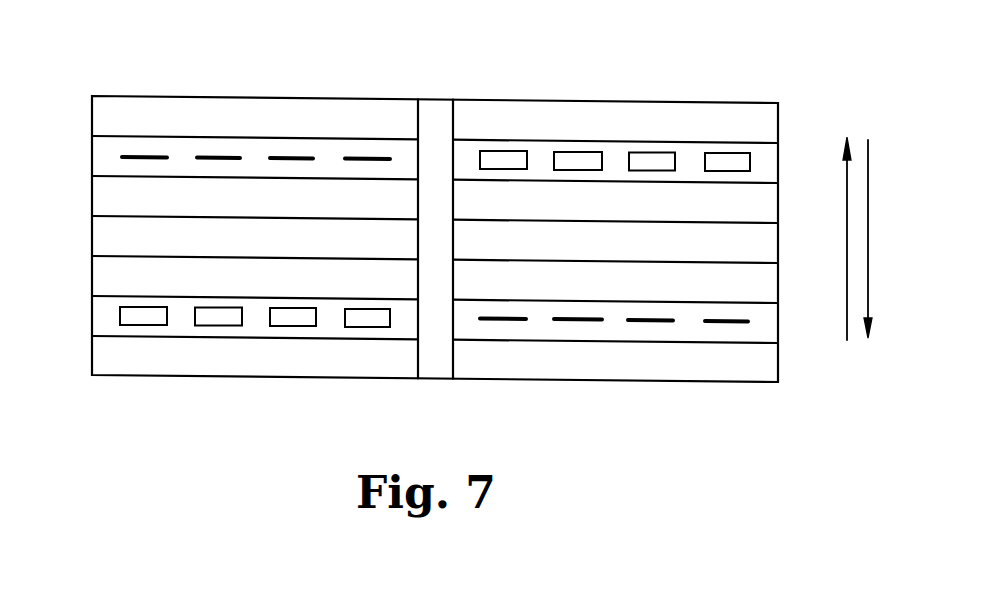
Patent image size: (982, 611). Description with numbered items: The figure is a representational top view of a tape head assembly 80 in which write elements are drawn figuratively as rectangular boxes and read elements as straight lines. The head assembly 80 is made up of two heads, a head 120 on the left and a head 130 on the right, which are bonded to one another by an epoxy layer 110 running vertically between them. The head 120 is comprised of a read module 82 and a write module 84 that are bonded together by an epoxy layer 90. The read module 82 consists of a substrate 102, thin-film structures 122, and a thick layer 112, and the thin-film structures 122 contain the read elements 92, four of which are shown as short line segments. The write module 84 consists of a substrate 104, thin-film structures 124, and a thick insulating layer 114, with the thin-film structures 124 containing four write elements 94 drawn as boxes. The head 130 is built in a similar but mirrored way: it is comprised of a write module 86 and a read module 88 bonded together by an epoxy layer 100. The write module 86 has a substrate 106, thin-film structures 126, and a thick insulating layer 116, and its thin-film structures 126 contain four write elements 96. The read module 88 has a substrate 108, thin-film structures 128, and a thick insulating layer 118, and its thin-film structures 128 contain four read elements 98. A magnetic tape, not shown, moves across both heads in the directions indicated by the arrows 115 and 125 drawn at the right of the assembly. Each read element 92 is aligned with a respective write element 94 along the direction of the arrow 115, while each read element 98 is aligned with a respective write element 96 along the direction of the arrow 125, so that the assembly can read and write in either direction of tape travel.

The head assembly 80 is at (470, 425).
The read module 82 is at (90, 96).
The write module 84 is at (90, 256).
The write module 86 is at (785, 103).
The read module 88 is at (785, 263).
The epoxy layer 90 is at (103, 232).
The read element 92 is at (203, 156).
The write element 94 is at (209, 318).
The write element 96 is at (718, 158).
The read element 98 is at (710, 322).
The epoxy layer 100 is at (763, 243).
The substrate 102 is at (342, 118).
The substrate 104 is at (370, 365).
The substrate 106 is at (615, 115).
The substrate 108 is at (603, 365).
The epoxy layer 110 is at (433, 362).
The thick layer 112 is at (255, 195).
The thick insulating layer 114 is at (330, 285).
The arrow 115 is at (847, 318).
The thick insulating layer 116 is at (755, 198).
The thick insulating layer 118 is at (755, 288).
The head 120 is at (90, 48).
The thin-film structures 122 is at (143, 145).
The thin-film structures 124 is at (254, 318).
The arrow 125 is at (868, 152).
The thin-film structures 126 is at (542, 152).
The thin-film structures 128 is at (537, 320).
The head 130 is at (783, 52).